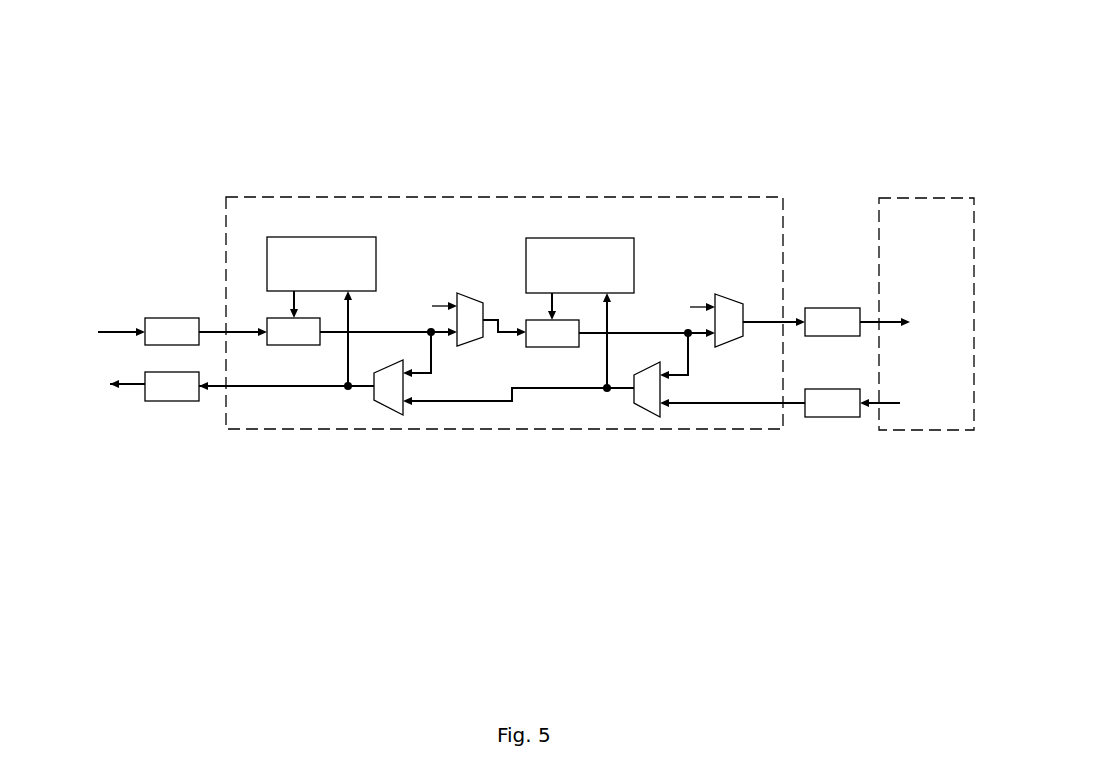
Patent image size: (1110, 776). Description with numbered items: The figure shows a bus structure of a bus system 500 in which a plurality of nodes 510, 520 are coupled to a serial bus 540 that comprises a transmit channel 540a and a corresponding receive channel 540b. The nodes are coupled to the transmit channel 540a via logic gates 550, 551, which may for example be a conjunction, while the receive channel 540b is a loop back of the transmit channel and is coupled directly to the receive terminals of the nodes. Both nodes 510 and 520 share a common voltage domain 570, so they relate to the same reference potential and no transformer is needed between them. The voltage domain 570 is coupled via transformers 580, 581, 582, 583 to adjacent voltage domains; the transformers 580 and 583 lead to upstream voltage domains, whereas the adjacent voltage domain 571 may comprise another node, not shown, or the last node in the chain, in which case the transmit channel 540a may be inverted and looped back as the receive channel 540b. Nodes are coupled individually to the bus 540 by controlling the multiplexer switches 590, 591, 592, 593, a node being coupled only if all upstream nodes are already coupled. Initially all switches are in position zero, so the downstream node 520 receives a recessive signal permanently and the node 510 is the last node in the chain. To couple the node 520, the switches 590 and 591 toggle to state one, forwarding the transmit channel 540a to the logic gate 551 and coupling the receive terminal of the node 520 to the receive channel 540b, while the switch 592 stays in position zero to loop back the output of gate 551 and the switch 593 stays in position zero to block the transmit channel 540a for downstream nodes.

The serial communication system 500 is at (507, 88).
The node 510 is at (321, 264).
The node 520 is at (580, 265).
The serial bus 540 is at (99, 384).
The transmit channel 540a is at (215, 331).
The receive channel 540b is at (220, 387).
The logic gate 550 is at (293, 331).
The logic gate 551 is at (552, 333).
The voltage domain 570 is at (348, 197).
The voltage domain 571 is at (931, 198).
The transformer 580 is at (172, 331).
The transformer 581 is at (832, 322).
The transformer 582 is at (832, 403).
The transformer 583 is at (172, 386).
The switch 590 is at (387, 397).
The switch 591 is at (473, 334).
The switch 592 is at (642, 400).
The switch 593 is at (730, 331).